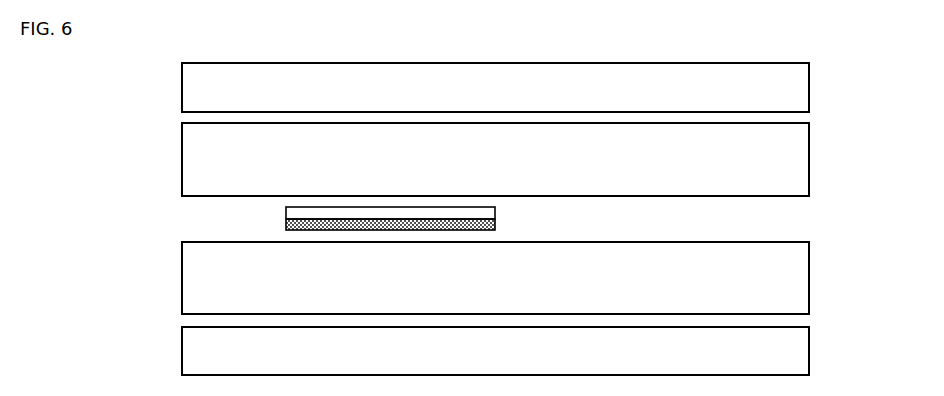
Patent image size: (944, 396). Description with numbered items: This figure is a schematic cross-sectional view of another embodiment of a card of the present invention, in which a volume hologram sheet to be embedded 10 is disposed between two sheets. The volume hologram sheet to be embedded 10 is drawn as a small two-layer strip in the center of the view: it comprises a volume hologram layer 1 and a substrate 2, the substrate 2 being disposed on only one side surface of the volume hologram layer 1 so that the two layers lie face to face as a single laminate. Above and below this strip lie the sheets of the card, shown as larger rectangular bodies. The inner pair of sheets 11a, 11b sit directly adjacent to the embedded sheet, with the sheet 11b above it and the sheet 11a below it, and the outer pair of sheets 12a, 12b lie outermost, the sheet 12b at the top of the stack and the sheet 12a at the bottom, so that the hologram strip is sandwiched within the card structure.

The volume hologram layer 1 is at (478, 225).
The substrate 2 is at (476, 212).
The volume hologram sheet to be embedded 10 is at (447, 219).
The lower mold plate 11a is at (766, 279).
The upper mold plate 11b is at (765, 161).
The lower press plate 12a is at (766, 350).
The upper press plate 12b is at (765, 88).